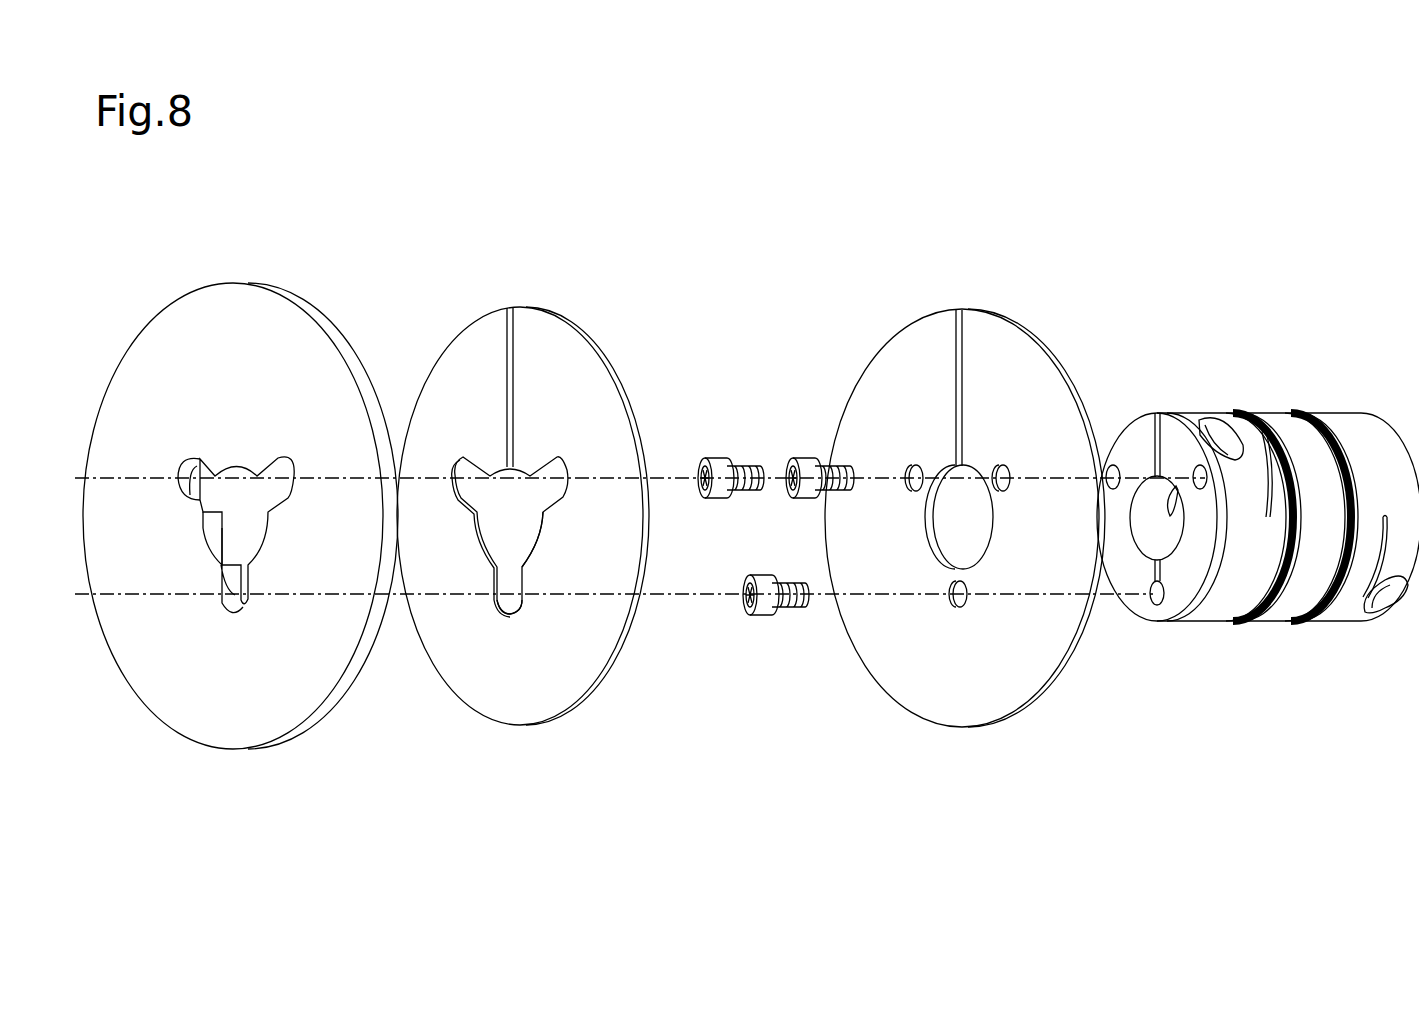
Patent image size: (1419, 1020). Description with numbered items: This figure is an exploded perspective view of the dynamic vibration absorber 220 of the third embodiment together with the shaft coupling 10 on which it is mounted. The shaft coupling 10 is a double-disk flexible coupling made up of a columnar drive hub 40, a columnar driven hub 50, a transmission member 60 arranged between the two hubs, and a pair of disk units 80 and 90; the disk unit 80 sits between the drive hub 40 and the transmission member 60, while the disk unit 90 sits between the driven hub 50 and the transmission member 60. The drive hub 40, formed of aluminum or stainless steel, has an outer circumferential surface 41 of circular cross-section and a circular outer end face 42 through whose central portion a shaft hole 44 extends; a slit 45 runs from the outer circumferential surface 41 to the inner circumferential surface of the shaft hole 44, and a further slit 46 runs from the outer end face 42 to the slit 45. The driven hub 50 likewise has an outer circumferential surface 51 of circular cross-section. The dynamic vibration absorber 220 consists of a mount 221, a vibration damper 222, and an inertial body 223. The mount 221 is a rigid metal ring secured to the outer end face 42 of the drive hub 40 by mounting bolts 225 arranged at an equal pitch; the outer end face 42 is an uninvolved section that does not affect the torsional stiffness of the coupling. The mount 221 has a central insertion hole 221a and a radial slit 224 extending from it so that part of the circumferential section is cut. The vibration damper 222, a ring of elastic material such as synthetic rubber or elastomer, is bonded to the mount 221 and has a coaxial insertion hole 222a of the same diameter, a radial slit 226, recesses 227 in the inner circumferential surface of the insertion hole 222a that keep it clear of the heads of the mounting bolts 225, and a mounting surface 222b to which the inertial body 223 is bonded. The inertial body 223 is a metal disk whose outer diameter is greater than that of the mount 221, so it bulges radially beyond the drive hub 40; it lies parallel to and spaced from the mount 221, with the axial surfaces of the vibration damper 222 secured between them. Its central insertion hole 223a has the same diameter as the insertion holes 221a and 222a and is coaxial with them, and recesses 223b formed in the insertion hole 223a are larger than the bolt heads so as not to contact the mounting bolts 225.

The shaft coupling 10 is at (1370, 674).
The drive hub 40 is at (1205, 615).
The outer circumferential surface 41 is at (1248, 428).
The outer end face 42 is at (1137, 606).
The shaft hole 44 is at (1146, 515).
The slit 45 is at (1180, 496).
The slit 46 is at (1168, 432).
The driven hub 50 is at (1352, 615).
The outer circumferential surface 51 is at (1367, 422).
The transmission member 60 is at (1275, 615).
The disk unit 80 is at (1300, 465).
The disk unit 90 is at (1345, 440).
The dynamic vibration absorber 220 is at (880, 251).
The mount 221 is at (890, 349).
The insertion hole 221a is at (924, 515).
The vibration damper 222 is at (492, 333).
The insertion hole 222a is at (530, 550).
The mounting surface 222b is at (468, 702).
The inertial body 223 is at (260, 308).
The insertion hole 223a is at (213, 542).
The recesses 223b is at (188, 502).
The slit 224 is at (938, 330).
The mounting bolts 225 is at (800, 458).
The slit 226 is at (507, 418).
The recesses 227 is at (553, 490).